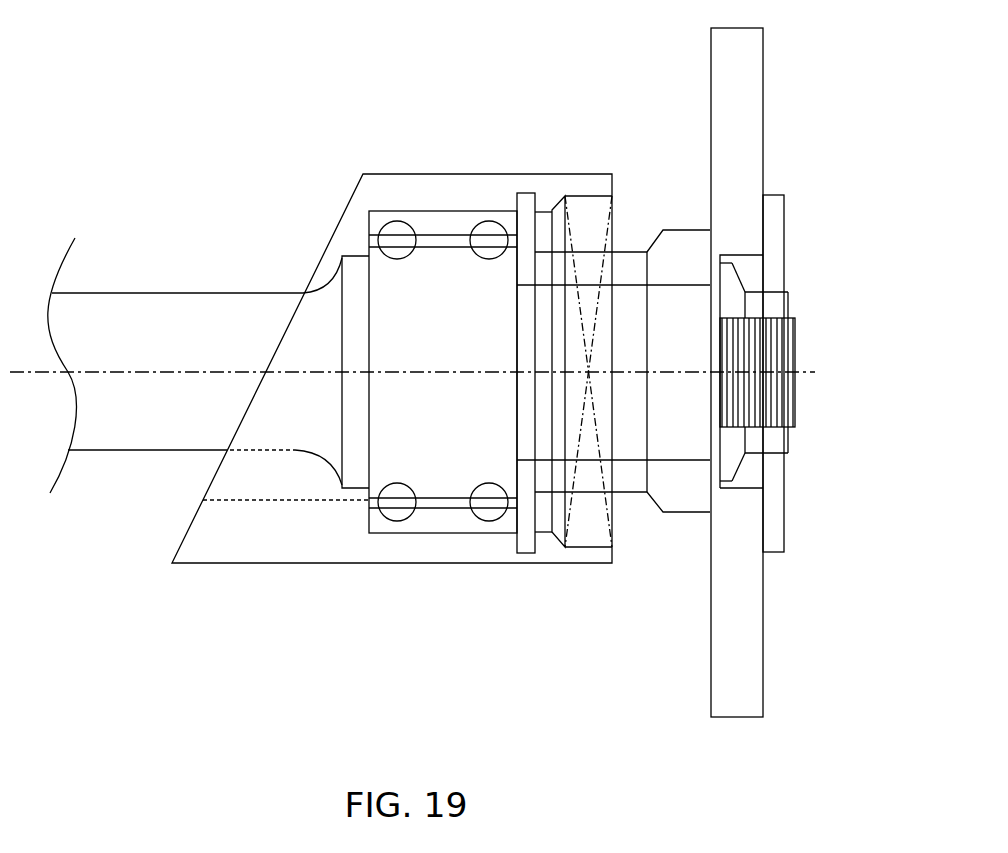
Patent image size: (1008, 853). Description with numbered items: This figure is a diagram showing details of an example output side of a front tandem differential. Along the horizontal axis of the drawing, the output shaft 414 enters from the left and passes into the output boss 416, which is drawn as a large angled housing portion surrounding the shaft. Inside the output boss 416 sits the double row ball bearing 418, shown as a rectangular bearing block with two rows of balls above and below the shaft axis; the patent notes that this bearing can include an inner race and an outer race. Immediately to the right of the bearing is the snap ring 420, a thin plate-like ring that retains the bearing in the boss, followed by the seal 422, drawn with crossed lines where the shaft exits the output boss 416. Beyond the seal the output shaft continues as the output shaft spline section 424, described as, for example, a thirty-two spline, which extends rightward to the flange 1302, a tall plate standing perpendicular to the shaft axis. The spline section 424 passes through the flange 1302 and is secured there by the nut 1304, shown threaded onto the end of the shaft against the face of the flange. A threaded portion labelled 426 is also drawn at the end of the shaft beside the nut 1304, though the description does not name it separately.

The output shaft 414 is at (137, 295).
The output boss 416 is at (313, 563).
The double row ball bearing 418 is at (402, 213).
The snap ring 420 is at (526, 193).
The seal 422 is at (585, 550).
The output shaft spline section 424 is at (702, 462).
The threaded rod 426 is at (795, 358).
The flange 1302 is at (765, 148).
The nut 1304 is at (787, 305).